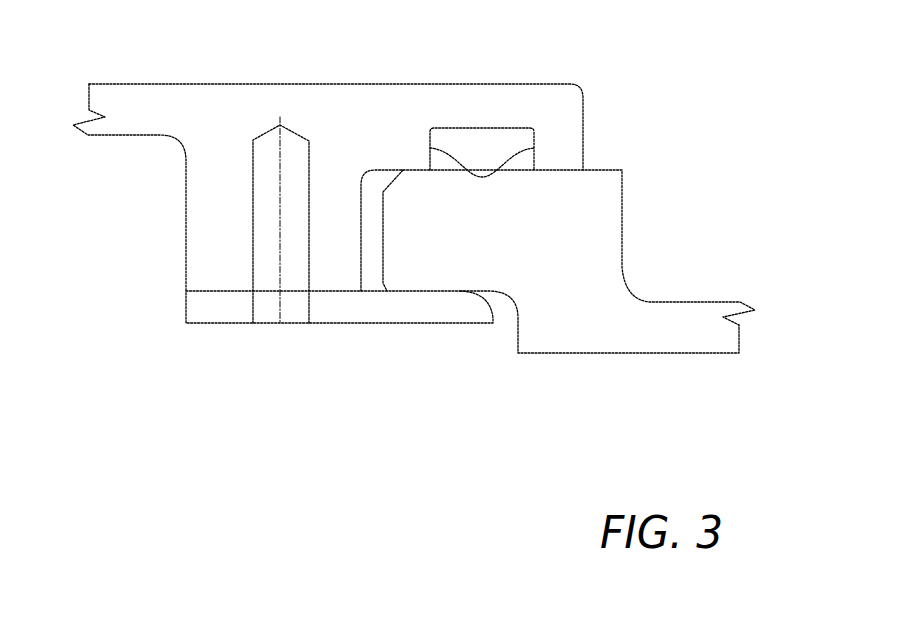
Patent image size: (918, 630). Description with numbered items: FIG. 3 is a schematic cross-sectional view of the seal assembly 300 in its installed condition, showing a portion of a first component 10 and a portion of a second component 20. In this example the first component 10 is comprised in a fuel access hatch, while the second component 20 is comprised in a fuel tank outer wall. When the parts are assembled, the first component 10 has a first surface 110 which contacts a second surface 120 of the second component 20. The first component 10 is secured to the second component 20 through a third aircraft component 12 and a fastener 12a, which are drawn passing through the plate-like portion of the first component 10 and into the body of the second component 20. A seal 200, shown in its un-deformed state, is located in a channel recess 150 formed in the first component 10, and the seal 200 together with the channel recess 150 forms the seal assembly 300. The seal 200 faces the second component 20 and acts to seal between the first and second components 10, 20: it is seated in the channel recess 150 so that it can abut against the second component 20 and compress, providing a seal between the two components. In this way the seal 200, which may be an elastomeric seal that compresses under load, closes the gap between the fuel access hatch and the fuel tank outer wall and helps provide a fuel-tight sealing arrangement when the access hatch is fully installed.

The first component 10 is at (226, 119).
The third aircraft component 12 is at (211, 310).
The fastener 12a is at (296, 310).
The second component 20 is at (550, 338).
The first surface 110 is at (410, 170).
The second surface 120 is at (598, 170).
The channel recess 150 is at (457, 128).
The seal 200 is at (518, 142).
The seal assembly 300 is at (635, 52).